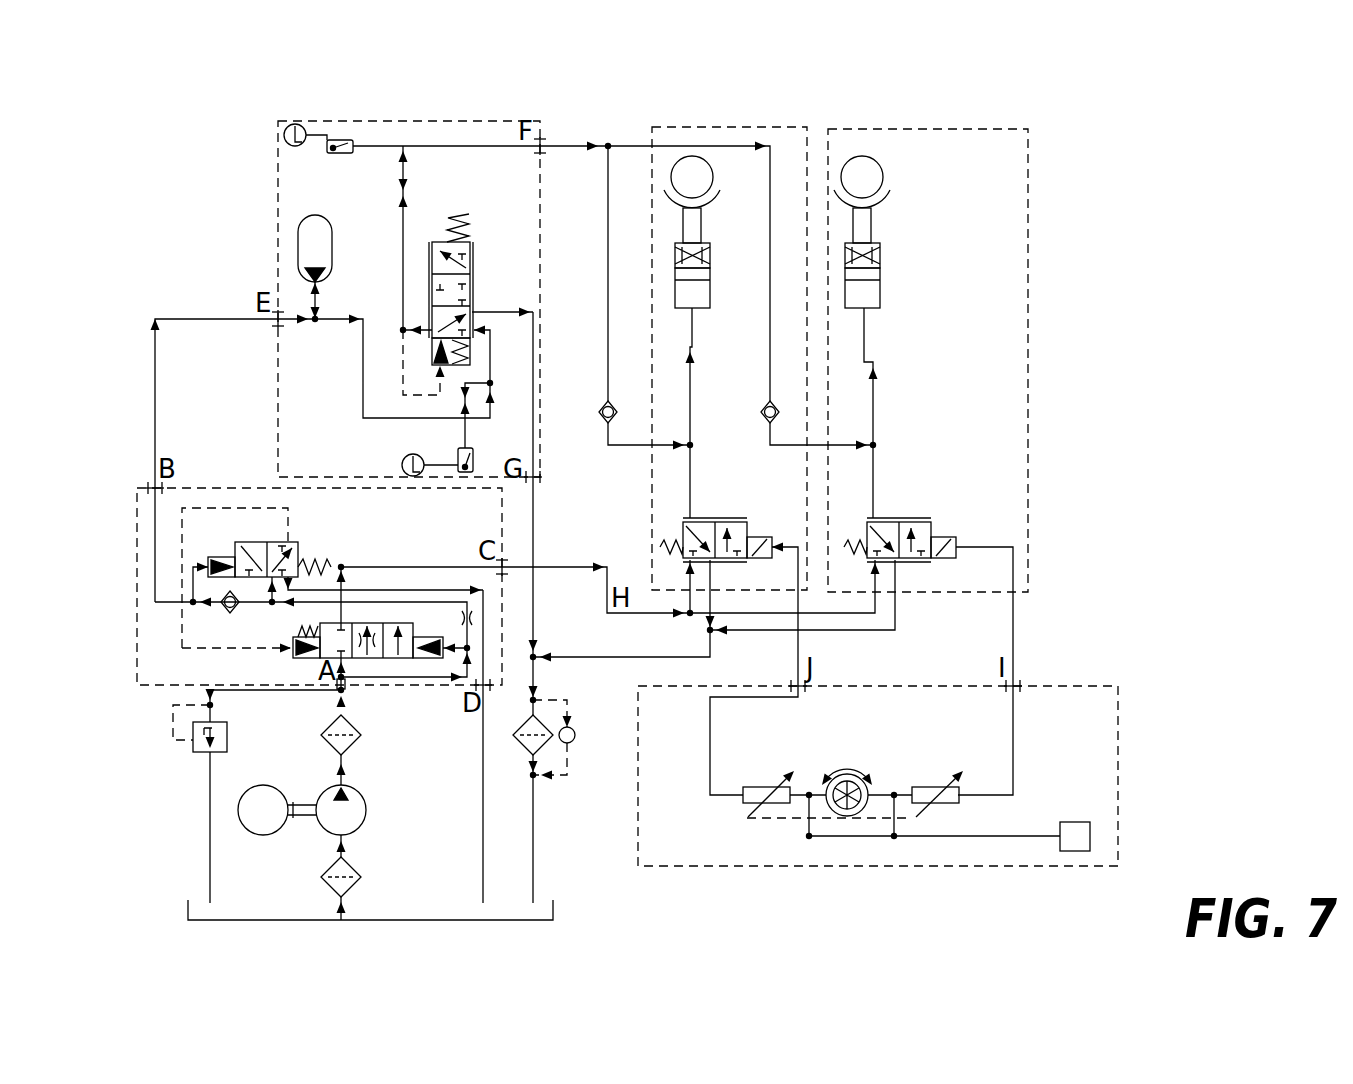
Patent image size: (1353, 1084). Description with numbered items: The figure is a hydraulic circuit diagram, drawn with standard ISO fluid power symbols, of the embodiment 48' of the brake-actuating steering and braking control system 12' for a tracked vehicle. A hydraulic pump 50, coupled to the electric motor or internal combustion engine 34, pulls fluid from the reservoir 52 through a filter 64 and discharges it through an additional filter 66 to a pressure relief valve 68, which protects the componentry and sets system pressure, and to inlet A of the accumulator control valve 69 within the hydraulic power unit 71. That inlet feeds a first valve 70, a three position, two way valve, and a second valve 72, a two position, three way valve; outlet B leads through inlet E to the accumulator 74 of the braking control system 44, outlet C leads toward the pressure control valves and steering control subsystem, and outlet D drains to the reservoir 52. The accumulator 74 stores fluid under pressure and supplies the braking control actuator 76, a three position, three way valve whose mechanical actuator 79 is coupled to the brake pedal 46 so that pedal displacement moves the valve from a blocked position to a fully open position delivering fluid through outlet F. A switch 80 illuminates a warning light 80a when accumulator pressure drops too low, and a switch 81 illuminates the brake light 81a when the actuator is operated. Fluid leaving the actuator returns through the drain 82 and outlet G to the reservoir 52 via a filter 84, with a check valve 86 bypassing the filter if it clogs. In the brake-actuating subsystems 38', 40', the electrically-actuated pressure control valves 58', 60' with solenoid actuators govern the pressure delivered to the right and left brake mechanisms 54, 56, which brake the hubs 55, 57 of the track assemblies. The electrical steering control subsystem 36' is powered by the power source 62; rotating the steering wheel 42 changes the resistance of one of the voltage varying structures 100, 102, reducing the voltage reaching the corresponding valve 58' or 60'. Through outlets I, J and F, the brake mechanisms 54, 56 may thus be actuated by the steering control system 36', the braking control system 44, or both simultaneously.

The brake-actuating steering and braking control system 12' is at (1026, 328).
The internal combustion engine 34 is at (260, 786).
The steering control subsystem 36' is at (904, 756).
The brake-actuating subsystem 38' is at (959, 360).
The brake-actuating subsystem 40' is at (729, 333).
The steering wheel 42 is at (860, 780).
The braking control system 44 is at (285, 176).
The brake pedal 46 is at (470, 214).
The brake-actuating steering and braking control system 48' is at (1110, 361).
The hydraulic pump 50 is at (358, 796).
The reservoir 52 is at (392, 920).
The right side brake mechanism 54 is at (880, 250).
The braking hub 55 is at (880, 164).
The left side brake mechanism 56 is at (711, 264).
The braking hub 57 is at (702, 185).
The electrically-actuated pressure control valve 58' is at (928, 628).
The electrically-actuated pressure control valve 60' is at (729, 638).
The power source 62 is at (1072, 822).
The filter 64 is at (355, 872).
The filter 66 is at (355, 730).
The pressure relief valve 68 is at (228, 730).
The accumulator control valve 69 is at (328, 506).
The first valve 70 is at (296, 658).
The hydraulic power unit 71 is at (410, 688).
The second valve 72 is at (298, 546).
The accumulator 74 is at (320, 222).
The braking control actuator 76 is at (470, 243).
The mechanical actuator 79 is at (447, 222).
The switch 80 is at (458, 452).
The warning light 80a is at (413, 476).
The switch 81 is at (348, 139).
The brake light 81a is at (284, 134).
The drain 82 is at (537, 546).
The filter 84 is at (520, 728).
The check valve 86 is at (569, 746).
The voltage varying structure 100 is at (960, 785).
The voltage varying structure 102 is at (752, 785).